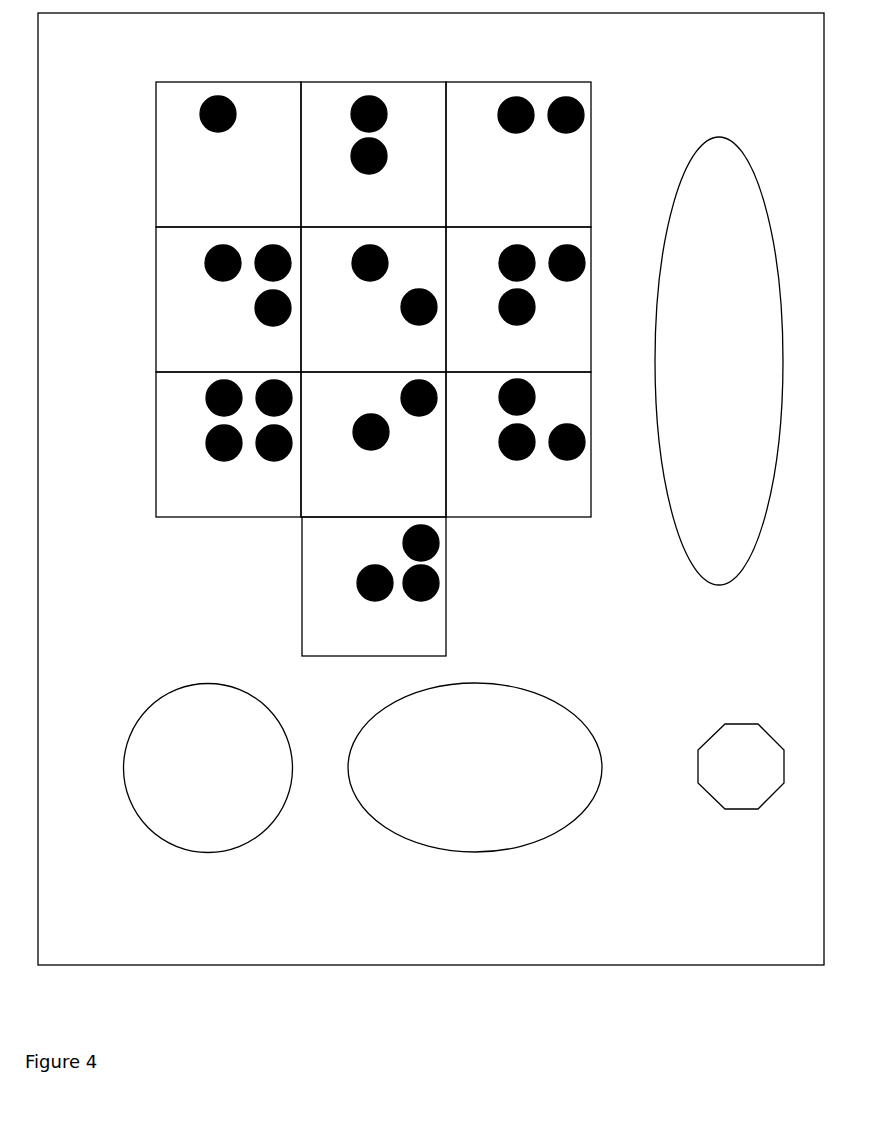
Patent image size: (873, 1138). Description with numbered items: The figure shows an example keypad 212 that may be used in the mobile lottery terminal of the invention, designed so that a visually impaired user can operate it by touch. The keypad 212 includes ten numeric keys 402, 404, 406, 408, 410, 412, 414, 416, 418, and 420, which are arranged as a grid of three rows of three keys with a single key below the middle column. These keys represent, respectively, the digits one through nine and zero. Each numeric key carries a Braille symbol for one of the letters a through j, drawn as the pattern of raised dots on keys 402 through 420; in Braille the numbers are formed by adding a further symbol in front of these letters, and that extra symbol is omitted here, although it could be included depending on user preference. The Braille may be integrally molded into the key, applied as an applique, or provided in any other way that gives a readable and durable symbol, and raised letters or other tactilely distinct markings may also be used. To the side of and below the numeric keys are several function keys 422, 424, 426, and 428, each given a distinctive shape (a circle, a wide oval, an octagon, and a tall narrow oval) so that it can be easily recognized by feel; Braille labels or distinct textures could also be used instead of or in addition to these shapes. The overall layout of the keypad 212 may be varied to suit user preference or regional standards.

The keypad 212 is at (747, 76).
The numeric key 402 is at (187, 214).
The numeric key 404 is at (342, 214).
The numeric key 406 is at (482, 214).
The numeric key 408 is at (188, 370).
The numeric key 410 is at (342, 370).
The numeric key 412 is at (490, 368).
The numeric key 414 is at (210, 510).
The numeric key 416 is at (357, 510).
The numeric key 418 is at (490, 508).
The numeric key 420 is at (351, 648).
The function key 422 is at (204, 774).
The function key 424 is at (471, 774).
The function key 426 is at (744, 774).
The function key 428 is at (723, 368).